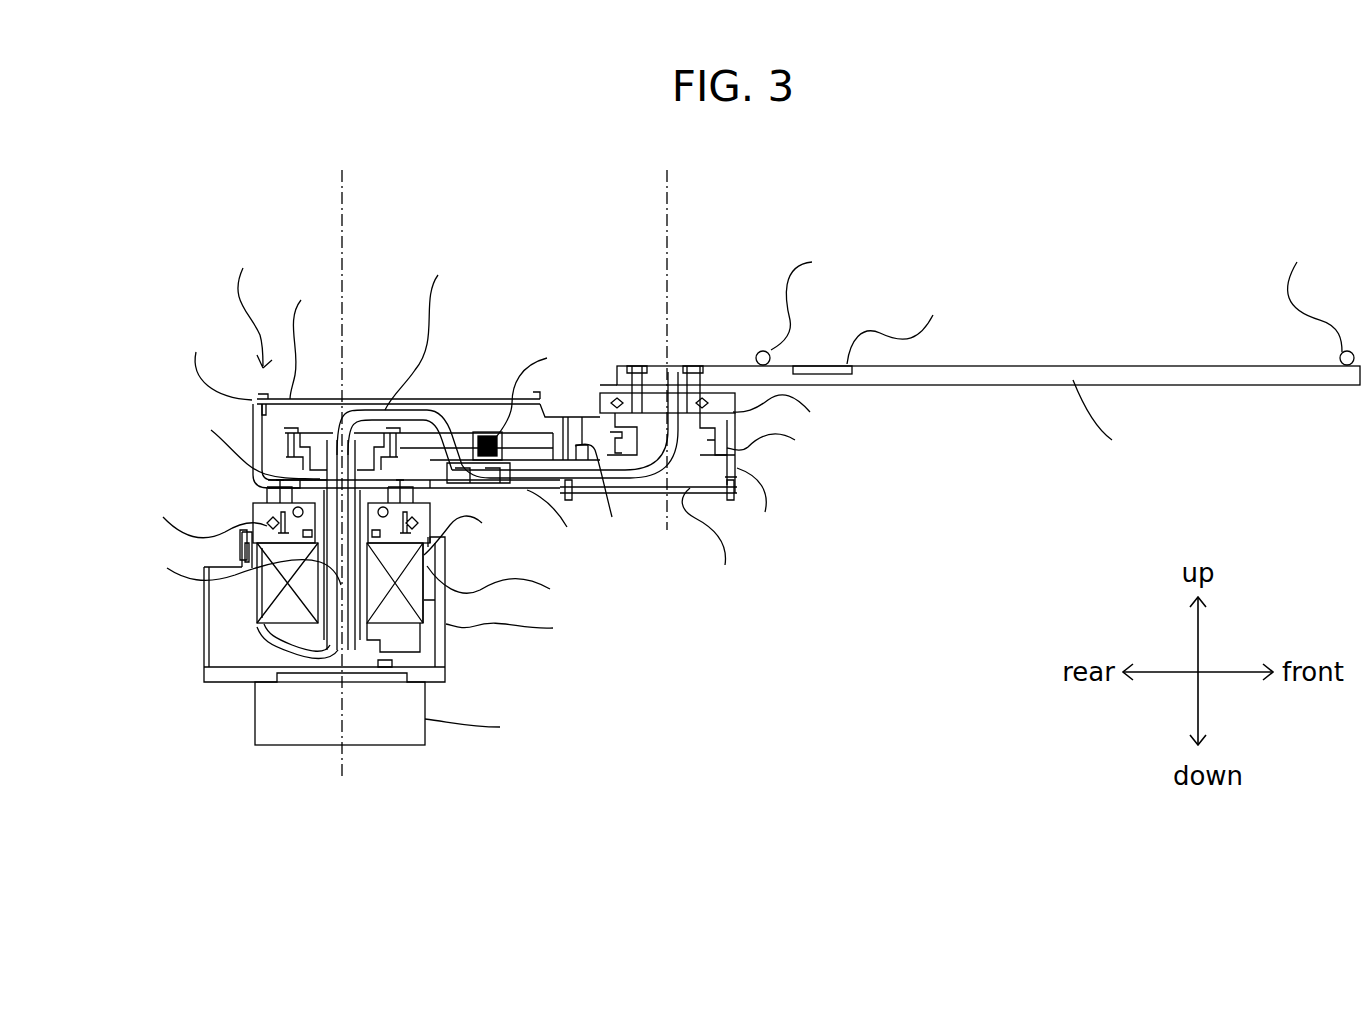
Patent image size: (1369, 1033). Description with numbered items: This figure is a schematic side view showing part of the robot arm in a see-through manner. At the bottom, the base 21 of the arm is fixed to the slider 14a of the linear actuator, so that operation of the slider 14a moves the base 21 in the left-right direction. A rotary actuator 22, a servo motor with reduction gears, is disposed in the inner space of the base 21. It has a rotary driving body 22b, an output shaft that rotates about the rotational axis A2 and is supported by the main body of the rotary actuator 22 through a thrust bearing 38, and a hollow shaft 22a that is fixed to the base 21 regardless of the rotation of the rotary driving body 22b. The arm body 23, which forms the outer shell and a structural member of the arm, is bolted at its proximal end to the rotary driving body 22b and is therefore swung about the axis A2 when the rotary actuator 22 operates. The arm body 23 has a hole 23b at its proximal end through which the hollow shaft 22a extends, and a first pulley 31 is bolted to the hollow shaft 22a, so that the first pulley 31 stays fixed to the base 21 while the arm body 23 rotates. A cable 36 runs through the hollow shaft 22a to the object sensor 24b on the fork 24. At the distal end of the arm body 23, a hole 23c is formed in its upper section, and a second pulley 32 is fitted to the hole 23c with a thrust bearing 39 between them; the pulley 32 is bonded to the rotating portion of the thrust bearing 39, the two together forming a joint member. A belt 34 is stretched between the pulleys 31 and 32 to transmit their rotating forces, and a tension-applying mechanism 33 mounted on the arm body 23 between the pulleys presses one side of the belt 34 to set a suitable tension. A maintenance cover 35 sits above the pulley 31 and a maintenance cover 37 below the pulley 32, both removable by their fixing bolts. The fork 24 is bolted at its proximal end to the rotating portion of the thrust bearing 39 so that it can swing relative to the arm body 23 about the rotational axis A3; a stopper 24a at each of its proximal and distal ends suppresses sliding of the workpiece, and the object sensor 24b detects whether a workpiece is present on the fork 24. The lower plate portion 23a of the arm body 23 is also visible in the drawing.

The slider 14a is at (404, 713).
The base 21 is at (397, 607).
The rotary actuator 22 is at (421, 605).
The hollow shaft 22a is at (226, 603).
The rotary driving body 22b is at (478, 569).
The arm body 23 is at (514, 443).
The bottom plate 23a is at (443, 520).
The hole 23b is at (289, 439).
The hole 23c is at (746, 499).
The fork 24 is at (988, 418).
The stopper 24a is at (1055, 300).
The object sensor 24b is at (881, 328).
The first pulley 31 is at (253, 403).
The second pulley 32 is at (724, 453).
The tension-applying mechanism 33 is at (515, 405).
The belt 34 is at (529, 476).
The maintenance cover 35 is at (428, 364).
The cable 36 is at (501, 446).
The maintenance cover 37 is at (648, 541).
The thrust bearing 38 is at (282, 520).
The thrust bearing 39 is at (725, 399).
The rotational axis A2 is at (341, 456).
The rotational axis A3 is at (669, 331).